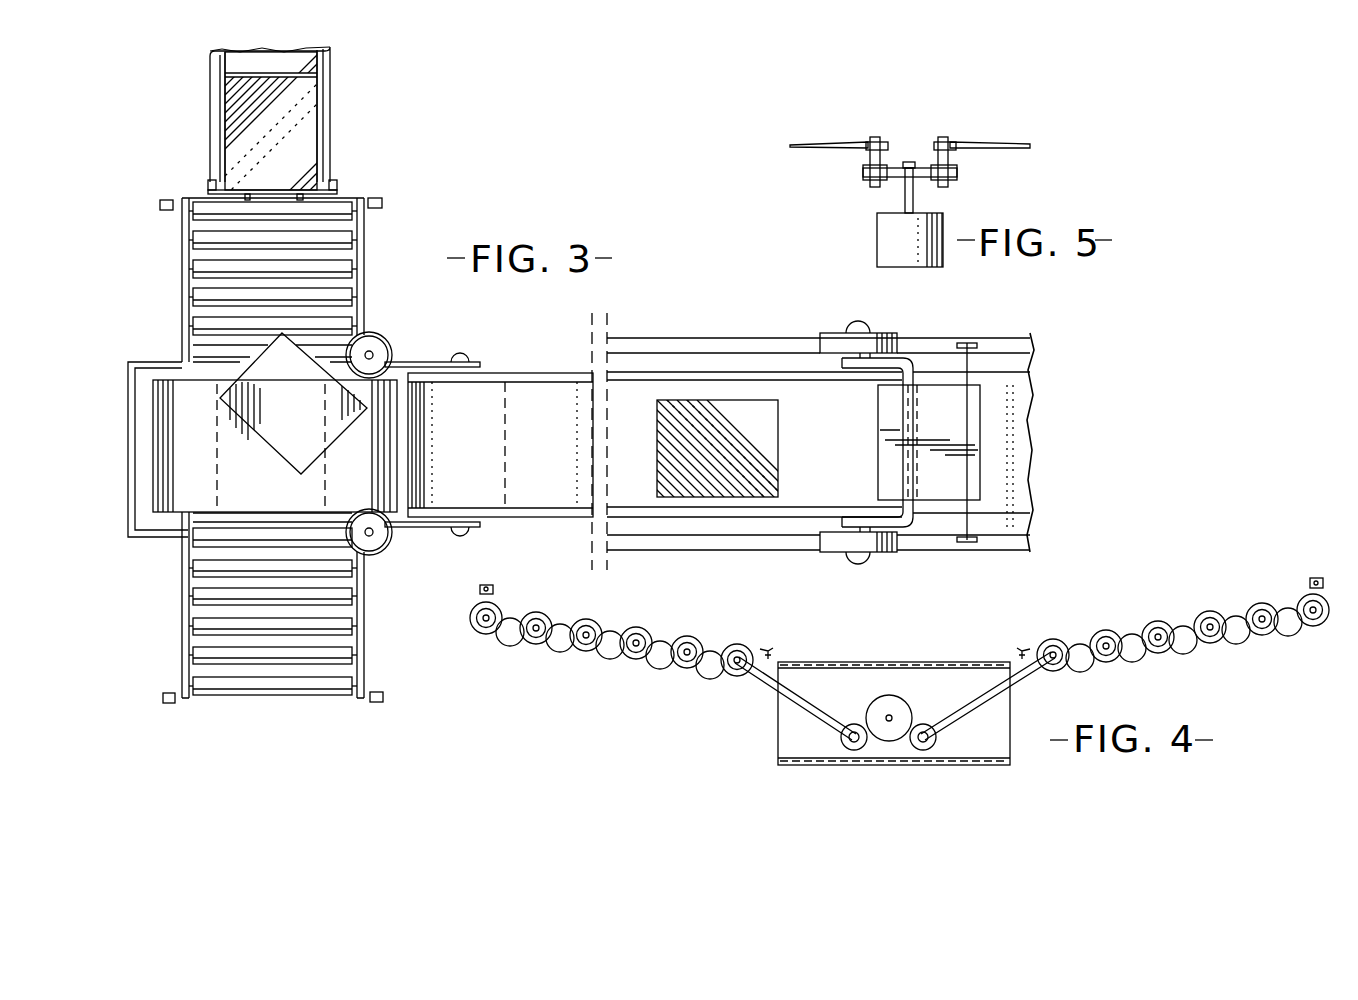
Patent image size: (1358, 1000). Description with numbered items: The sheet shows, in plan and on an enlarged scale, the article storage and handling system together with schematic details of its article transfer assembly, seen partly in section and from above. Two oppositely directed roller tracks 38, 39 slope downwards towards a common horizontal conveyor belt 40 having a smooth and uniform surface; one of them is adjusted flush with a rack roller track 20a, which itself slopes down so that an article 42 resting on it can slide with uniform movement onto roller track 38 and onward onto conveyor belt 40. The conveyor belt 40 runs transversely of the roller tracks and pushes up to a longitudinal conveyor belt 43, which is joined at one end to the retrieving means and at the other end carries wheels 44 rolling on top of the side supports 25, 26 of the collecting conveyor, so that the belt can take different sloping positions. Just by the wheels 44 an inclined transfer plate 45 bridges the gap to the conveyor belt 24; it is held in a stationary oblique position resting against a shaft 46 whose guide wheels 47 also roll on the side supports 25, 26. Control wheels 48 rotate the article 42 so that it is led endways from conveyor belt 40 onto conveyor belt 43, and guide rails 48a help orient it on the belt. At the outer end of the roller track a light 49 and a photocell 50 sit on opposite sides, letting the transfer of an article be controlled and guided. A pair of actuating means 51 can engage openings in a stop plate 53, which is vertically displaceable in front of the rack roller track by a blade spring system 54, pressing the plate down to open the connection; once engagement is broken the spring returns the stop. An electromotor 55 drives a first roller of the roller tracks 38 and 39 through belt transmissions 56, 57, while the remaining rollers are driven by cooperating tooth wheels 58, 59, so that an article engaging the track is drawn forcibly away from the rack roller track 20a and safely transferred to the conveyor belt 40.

In FIG. 3, the rack roller track 20a is at (318, 108).
In FIG. 3, the conveyor belt 24 is at (683, 525).
In FIG. 3, the side support 25 is at (643, 348).
In FIG. 3, the side support 26 is at (780, 552).
In FIG. 3, the roller track 38 is at (323, 270).
In FIG. 3, the roller track 39 is at (278, 685).
In FIG. 3, the horizontal conveyor belt 40 is at (235, 485).
In FIG. 4, the horizontal conveyor belt 40 is at (865, 662).
In FIG. 3, the article 42 is at (247, 112).
In FIG. 3, the longitudinal conveyor belt 43 is at (525, 395).
In FIG. 3, the wheels 44 is at (835, 347).
In FIG. 3, the inclined transfer plate 45 is at (958, 417).
In FIG. 3, the shaft 46 is at (972, 372).
In FIG. 3, the guide wheels 47 is at (967, 343).
In FIG. 3, the control wheels 48 is at (382, 347).
In FIG. 3, the guide rails 48a is at (275, 518).
In FIG. 4, the guide rails 48a is at (773, 652).
In FIG. 3, the light 49 is at (167, 199).
In FIG. 3, the photocell 50 is at (383, 200).
In FIG. 4, the photocell 50 is at (494, 589).
In FIG. 3, the actuating means 51 is at (235, 190).
In FIG. 3, the stop plate 53 is at (302, 177).
In FIG. 3, the blade spring system 54 is at (332, 133).
In FIG. 5, the electromotor 55 is at (886, 233).
In FIG. 4, the electromotor 55 is at (905, 708).
In FIG. 5, the belt transmission 56 is at (835, 148).
In FIG. 4, the belt transmission 56 is at (795, 705).
In FIG. 5, the belt transmission 57 is at (965, 142).
In FIG. 4, the belt transmission 57 is at (975, 713).
In FIG. 4, the tooth wheel 58 is at (628, 636).
In FIG. 4, the tooth wheel 59 is at (657, 660).